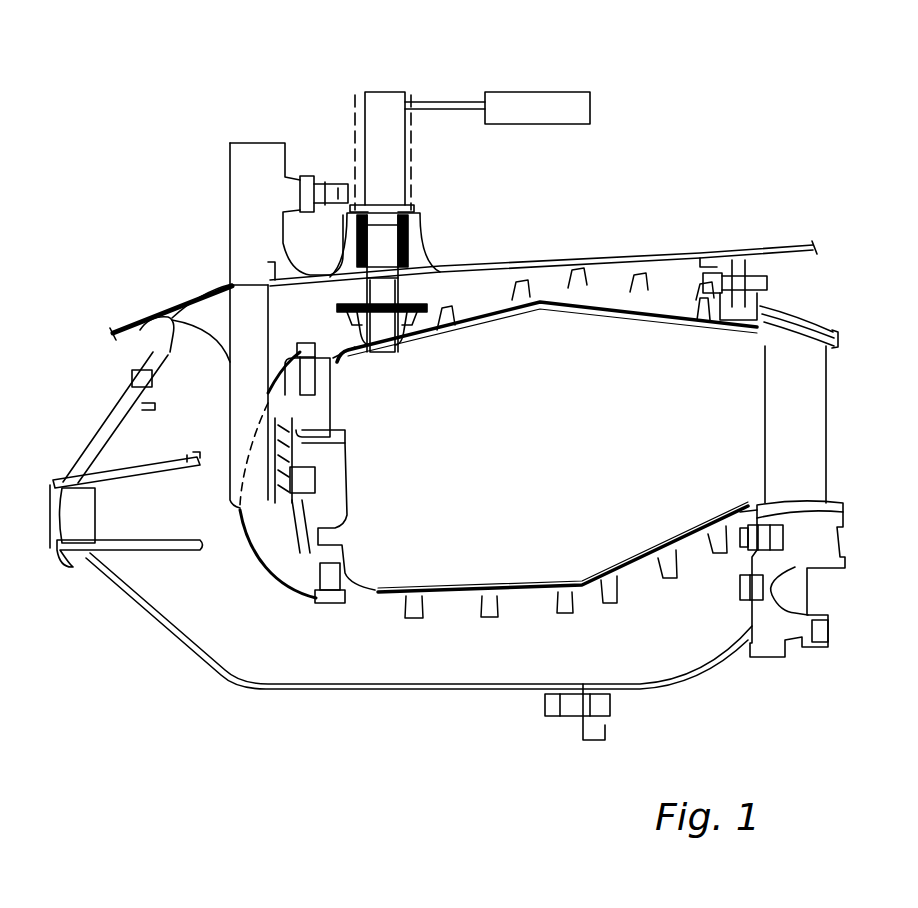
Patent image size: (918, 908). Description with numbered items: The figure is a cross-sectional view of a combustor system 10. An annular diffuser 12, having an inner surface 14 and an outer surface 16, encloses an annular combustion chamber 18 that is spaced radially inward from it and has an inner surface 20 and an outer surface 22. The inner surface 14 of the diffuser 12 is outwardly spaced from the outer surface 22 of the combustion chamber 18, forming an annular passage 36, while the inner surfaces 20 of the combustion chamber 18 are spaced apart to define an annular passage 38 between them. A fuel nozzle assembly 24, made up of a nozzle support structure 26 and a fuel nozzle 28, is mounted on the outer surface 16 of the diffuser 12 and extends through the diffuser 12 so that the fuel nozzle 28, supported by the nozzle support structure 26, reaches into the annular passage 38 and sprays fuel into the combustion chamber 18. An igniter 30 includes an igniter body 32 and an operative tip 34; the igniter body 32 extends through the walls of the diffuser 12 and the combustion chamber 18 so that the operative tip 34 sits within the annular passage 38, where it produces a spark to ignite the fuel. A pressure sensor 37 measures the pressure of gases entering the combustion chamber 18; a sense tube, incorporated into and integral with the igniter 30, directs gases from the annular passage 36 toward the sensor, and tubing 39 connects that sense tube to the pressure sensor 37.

The combustor system 10 is at (752, 104).
The diffuser 12 is at (735, 234).
The inner surface 14 is at (670, 286).
The outer surface 16 is at (672, 258).
The combustion chamber 18 is at (520, 612).
The inner surface 20 is at (543, 315).
The outer surface 22 is at (605, 303).
The fuel nozzle assembly 24 is at (232, 520).
The nozzle support structure 26 is at (172, 353).
The fuel nozzle 28 is at (298, 560).
The igniter 30 is at (376, 76).
The igniter body 32 is at (356, 146).
The operative tip 34 is at (386, 352).
The annular passage 36 is at (470, 297).
The pressure sensor 37 is at (542, 92).
The annular passage 38 is at (658, 520).
The tubing 39 is at (437, 104).